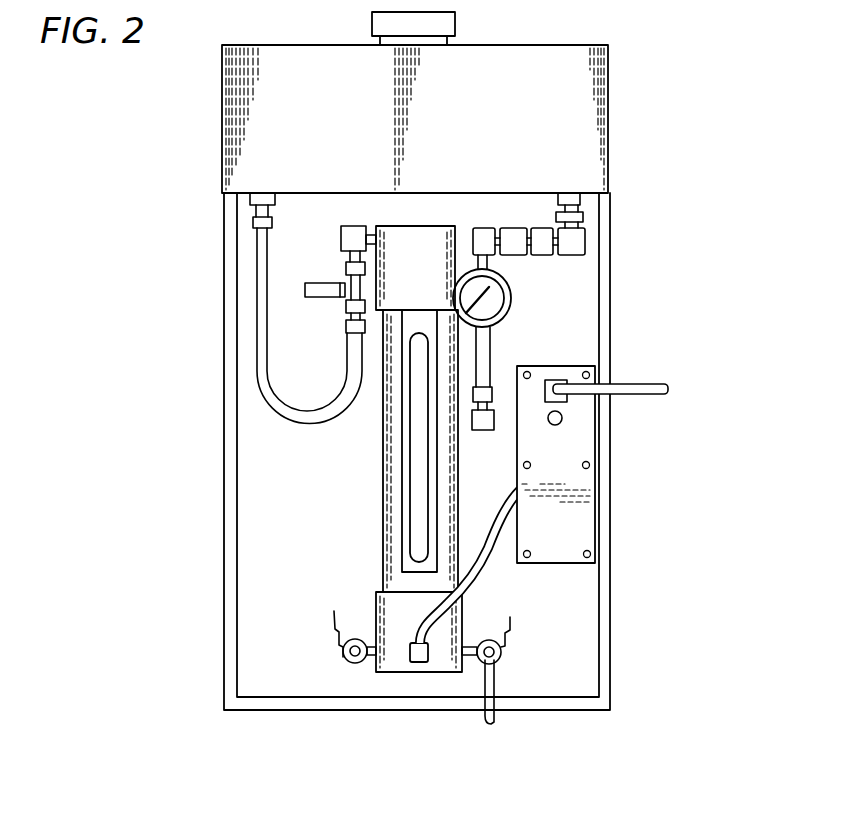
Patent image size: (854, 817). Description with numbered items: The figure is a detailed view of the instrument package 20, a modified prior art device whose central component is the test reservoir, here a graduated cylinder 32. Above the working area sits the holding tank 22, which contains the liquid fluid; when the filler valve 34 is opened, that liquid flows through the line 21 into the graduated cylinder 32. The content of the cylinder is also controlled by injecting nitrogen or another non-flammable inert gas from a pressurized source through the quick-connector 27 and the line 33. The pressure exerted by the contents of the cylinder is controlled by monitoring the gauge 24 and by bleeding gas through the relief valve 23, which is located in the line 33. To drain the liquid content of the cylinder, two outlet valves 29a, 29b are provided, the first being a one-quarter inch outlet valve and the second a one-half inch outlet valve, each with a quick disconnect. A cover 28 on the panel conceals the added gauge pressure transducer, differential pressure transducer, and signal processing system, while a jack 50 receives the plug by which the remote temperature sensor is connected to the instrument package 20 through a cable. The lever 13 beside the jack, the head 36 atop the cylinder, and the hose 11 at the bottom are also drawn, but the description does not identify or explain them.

The instrument package 20 is at (633, 101).
The holding tank 22 is at (595, 153).
The relief valve 23 is at (515, 227).
The line 33 is at (487, 262).
The gauge 24 is at (506, 318).
The quick-connector 27 is at (481, 431).
The cover 28 is at (583, 522).
The switch lever 13 is at (648, 396).
The jack 50 is at (563, 420).
The line 21 is at (288, 413).
The filler valve 34 is at (310, 297).
The flow meter head 36 is at (428, 279).
The graduated cylinder 32 is at (383, 507).
The outlet valve 29a is at (355, 663).
The outlet valve 29b is at (498, 660).
The outlet hose 11 is at (487, 722).